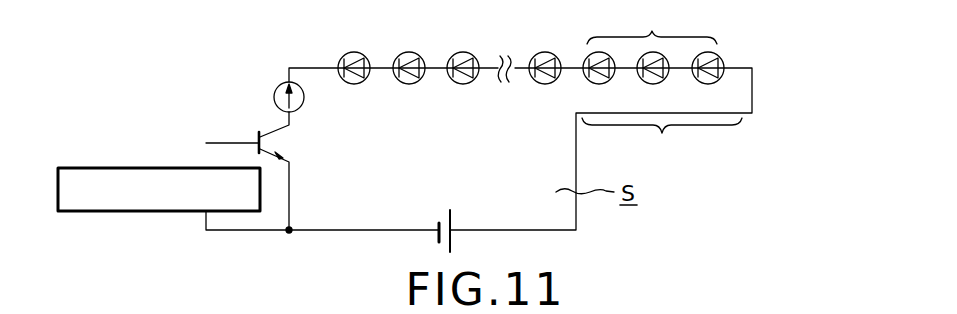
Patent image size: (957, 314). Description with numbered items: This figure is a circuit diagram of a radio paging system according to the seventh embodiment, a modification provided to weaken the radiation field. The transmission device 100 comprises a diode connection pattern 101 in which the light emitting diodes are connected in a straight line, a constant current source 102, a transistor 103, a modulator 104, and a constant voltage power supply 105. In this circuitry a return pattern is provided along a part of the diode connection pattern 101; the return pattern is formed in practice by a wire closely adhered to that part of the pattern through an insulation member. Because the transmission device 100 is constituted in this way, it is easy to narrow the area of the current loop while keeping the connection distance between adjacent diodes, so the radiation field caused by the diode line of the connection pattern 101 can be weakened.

The transmission device 100 is at (773, 42).
The diode connection pattern 101 is at (436, 63).
The constant current source 102 is at (274, 94).
The transistor 103 is at (262, 134).
The modulator 104 is at (173, 167).
The constant voltage power supply 105 is at (443, 218).